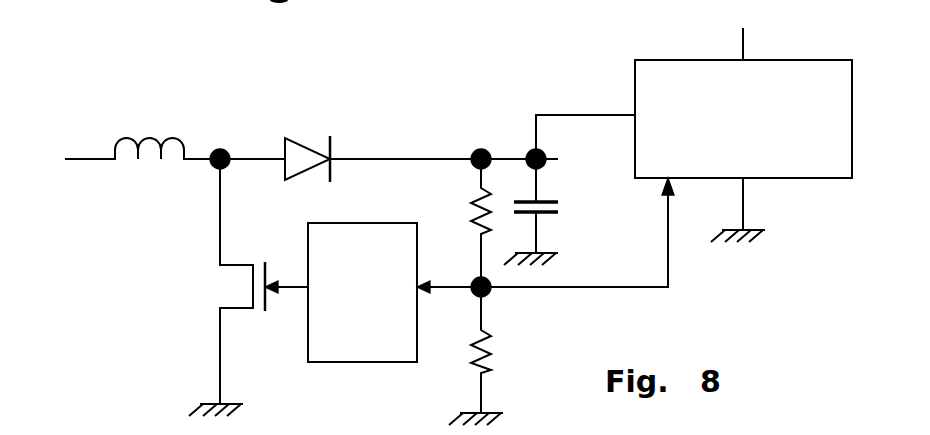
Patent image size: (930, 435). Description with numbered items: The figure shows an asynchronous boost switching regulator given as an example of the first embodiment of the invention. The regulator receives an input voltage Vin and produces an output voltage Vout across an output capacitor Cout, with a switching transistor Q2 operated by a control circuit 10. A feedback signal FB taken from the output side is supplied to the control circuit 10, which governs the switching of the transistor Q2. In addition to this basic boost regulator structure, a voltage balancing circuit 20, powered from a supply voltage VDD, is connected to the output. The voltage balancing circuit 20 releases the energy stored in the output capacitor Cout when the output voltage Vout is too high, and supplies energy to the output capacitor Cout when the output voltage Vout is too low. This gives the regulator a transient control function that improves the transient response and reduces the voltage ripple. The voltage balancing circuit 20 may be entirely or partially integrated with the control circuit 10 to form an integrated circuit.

The control circuit 10 is at (350, 336).
The voltage balancing circuit 20 is at (731, 160).
The transistor Q2 is at (244, 281).
The output capacitor Cout is at (562, 212).
The input voltage Vin is at (151, 157).
The output voltage Vout is at (583, 159).
The feedback signal FB is at (545, 235).
The supply voltage VDD is at (743, 30).